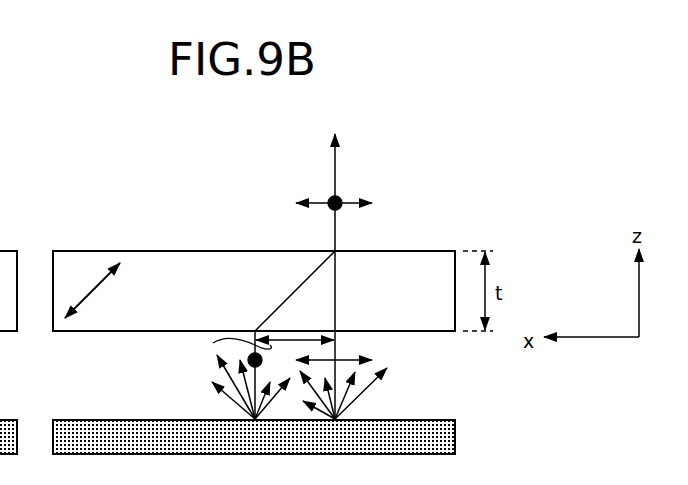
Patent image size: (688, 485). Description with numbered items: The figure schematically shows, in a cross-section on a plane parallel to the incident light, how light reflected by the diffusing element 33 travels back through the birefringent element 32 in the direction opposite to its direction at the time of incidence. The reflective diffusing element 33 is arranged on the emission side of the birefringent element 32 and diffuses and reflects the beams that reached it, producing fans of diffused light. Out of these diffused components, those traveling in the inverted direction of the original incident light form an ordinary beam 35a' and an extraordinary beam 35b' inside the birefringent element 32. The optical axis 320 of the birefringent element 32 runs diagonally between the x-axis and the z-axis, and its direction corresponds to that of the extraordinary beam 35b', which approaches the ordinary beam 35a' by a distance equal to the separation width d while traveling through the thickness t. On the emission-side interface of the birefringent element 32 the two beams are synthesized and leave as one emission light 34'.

The birefringent element 32 is at (123, 250).
The optical axis 320 is at (86, 294).
The reflective diffusing element 33 is at (127, 420).
The emission light 34' is at (359, 189).
The ordinary beam 35a' is at (365, 335).
The extraordinary beam 35b' is at (267, 335).